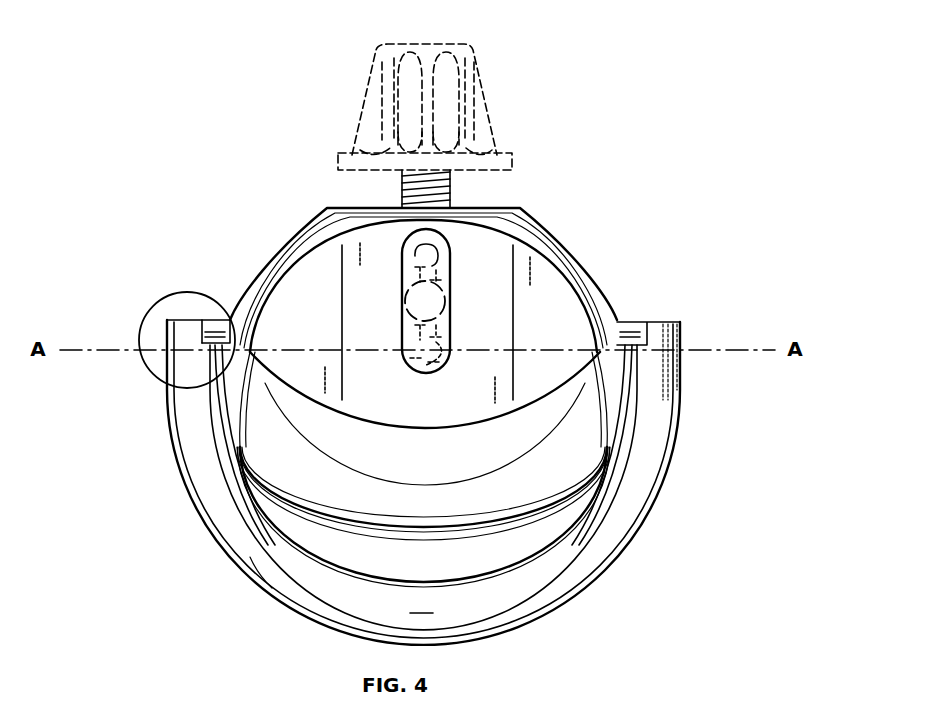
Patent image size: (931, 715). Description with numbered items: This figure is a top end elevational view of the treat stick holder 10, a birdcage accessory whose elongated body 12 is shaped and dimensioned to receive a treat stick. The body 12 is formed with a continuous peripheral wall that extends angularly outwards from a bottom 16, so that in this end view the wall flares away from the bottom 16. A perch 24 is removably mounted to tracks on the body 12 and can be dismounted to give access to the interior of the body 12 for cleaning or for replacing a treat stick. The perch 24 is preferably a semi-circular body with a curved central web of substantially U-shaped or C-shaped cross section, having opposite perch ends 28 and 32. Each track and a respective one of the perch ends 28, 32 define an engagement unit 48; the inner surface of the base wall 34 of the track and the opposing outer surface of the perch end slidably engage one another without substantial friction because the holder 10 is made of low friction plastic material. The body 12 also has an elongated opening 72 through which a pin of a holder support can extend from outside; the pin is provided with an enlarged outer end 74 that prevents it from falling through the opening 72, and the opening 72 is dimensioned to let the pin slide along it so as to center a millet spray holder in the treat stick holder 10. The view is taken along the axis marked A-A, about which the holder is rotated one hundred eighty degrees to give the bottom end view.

The treat stick holder 10 is at (282, 141).
The body 12 is at (573, 256).
The bottom 16 is at (362, 232).
The perch 24 is at (573, 547).
The perch end 28 is at (226, 332).
The perch end 32 is at (603, 345).
The base wall 34 is at (623, 332).
The engagement unit 48 is at (158, 340).
The elongated opening 72 is at (417, 363).
The enlarged outer end 74 is at (422, 300).